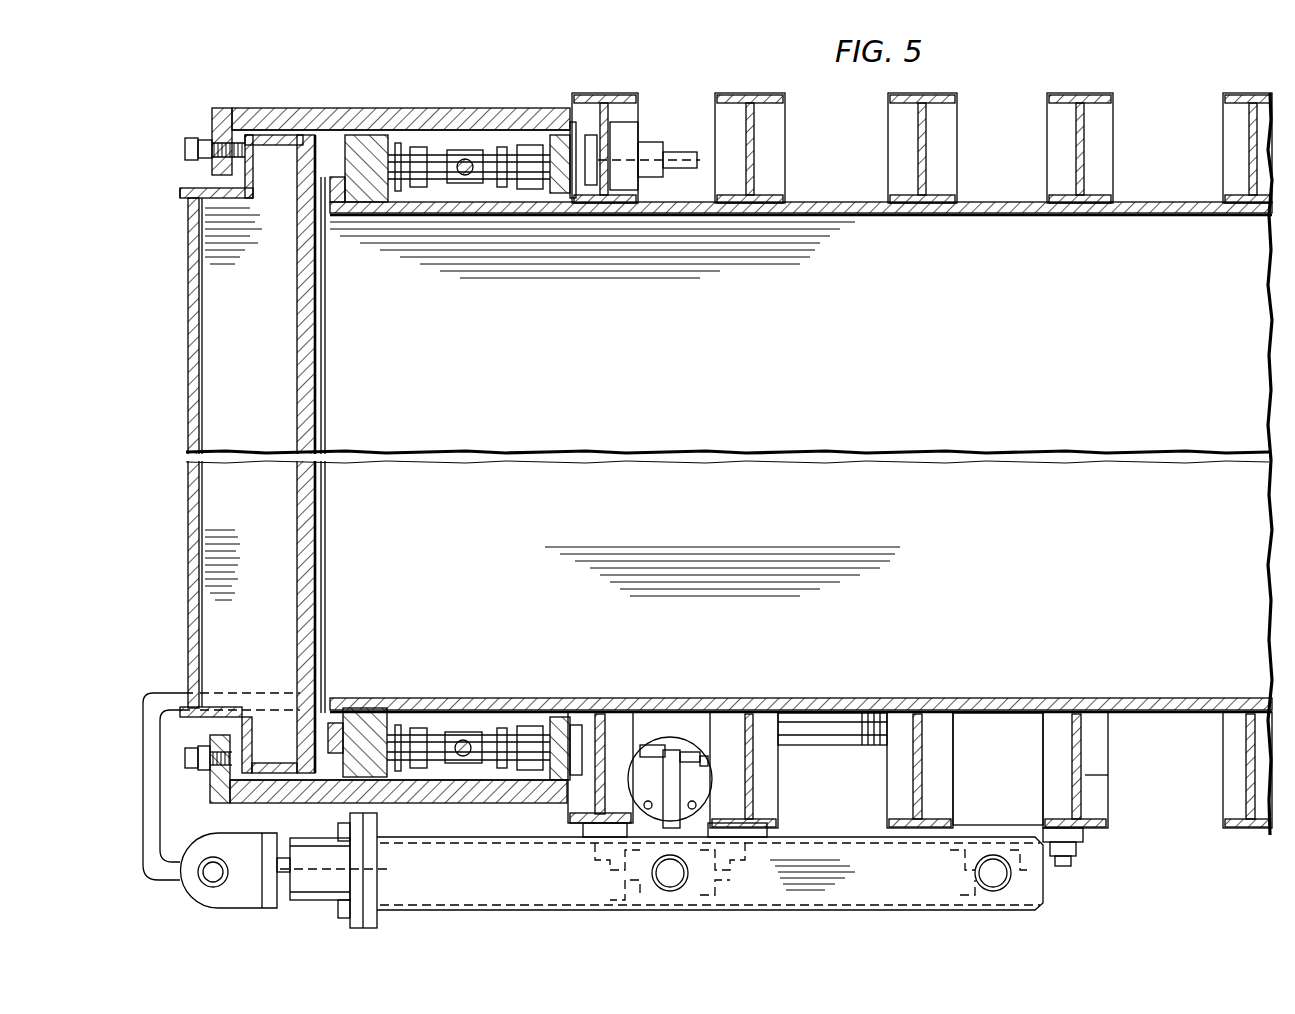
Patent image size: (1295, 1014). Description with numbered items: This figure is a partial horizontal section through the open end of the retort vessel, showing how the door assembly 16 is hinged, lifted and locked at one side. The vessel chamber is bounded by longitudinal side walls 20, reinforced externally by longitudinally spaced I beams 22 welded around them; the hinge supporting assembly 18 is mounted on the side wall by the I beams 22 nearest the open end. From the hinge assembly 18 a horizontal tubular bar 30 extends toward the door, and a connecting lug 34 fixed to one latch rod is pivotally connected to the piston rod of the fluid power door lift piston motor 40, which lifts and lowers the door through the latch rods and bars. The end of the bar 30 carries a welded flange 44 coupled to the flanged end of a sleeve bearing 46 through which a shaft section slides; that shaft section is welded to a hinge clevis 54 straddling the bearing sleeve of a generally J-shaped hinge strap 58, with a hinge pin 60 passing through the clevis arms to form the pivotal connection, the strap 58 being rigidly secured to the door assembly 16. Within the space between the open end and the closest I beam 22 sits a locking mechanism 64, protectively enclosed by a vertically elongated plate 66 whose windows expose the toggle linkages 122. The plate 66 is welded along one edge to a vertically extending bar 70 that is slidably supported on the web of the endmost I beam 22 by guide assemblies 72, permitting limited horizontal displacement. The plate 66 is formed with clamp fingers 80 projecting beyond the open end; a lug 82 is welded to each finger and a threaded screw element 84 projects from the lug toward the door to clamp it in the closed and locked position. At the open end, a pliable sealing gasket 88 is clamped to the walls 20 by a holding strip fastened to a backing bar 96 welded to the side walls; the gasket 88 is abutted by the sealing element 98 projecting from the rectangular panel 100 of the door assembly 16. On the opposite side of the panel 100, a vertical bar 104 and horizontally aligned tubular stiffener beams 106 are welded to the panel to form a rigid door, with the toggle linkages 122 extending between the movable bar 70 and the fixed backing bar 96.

The door assembly 16 is at (183, 552).
The hinge supporting assembly 18 is at (890, 920).
The longitudinal side walls 20 is at (1160, 718).
The I beams 22 is at (1085, 775).
The tubular bar 30 is at (805, 900).
The connecting lug 34 is at (665, 745).
The door lift piston motor 40 is at (710, 745).
The flange 44 is at (368, 925).
The sleeve bearing 46 is at (330, 880).
The hinge clevis 54 is at (243, 902).
The hinge strap 58 is at (150, 850).
The hinge pin 60 is at (213, 878).
The locking mechanism 64 is at (500, 106).
The vertically elongated plate 66 is at (443, 110).
The vertically extending bar 70 is at (555, 715).
The guide assembly 72 is at (652, 135).
The clamp finger 80 is at (283, 108).
The lug 82 is at (215, 792).
The threaded screw element 84 is at (205, 750).
The sealing gasket 88 is at (345, 698).
The backing bar 96 is at (385, 698).
The sealing element 98 is at (325, 400).
The rectangular panel 100 is at (318, 325).
The vertical bar 104 is at (185, 190).
The tubular stiffener beam 106 is at (185, 365).
The toggle linkage 122 is at (478, 722).